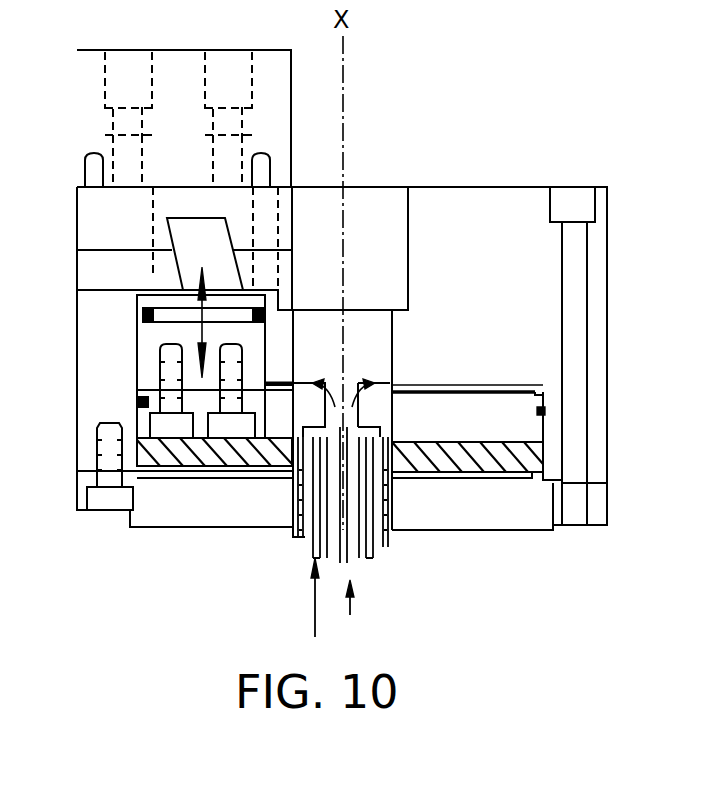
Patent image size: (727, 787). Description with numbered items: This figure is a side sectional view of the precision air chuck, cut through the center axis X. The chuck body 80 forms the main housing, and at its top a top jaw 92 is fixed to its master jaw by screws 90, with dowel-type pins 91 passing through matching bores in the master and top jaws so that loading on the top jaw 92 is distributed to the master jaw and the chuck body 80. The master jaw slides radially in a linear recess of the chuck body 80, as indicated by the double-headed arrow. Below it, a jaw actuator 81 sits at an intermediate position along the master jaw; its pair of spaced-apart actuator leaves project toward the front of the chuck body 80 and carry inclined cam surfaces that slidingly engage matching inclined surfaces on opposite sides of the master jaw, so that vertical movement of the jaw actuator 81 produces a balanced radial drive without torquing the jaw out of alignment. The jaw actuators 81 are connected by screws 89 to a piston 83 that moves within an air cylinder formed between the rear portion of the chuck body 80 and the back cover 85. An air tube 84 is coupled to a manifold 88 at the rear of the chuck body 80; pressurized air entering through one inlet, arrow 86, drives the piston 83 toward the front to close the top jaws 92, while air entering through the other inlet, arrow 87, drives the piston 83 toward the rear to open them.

The chuck body 80 is at (607, 244).
The jaw actuator 81 is at (150, 333).
The piston 83 is at (512, 417).
The air tube 84 is at (300, 541).
The back cover 85 is at (533, 513).
The inlet arrow 86 is at (312, 600).
The inlet arrow 87 is at (365, 524).
The manifold 88 is at (393, 505).
The screws 89 is at (175, 443).
The screws 90 is at (130, 108).
The dowel-type pins 91 is at (79, 165).
The top jaw 92 is at (83, 75).